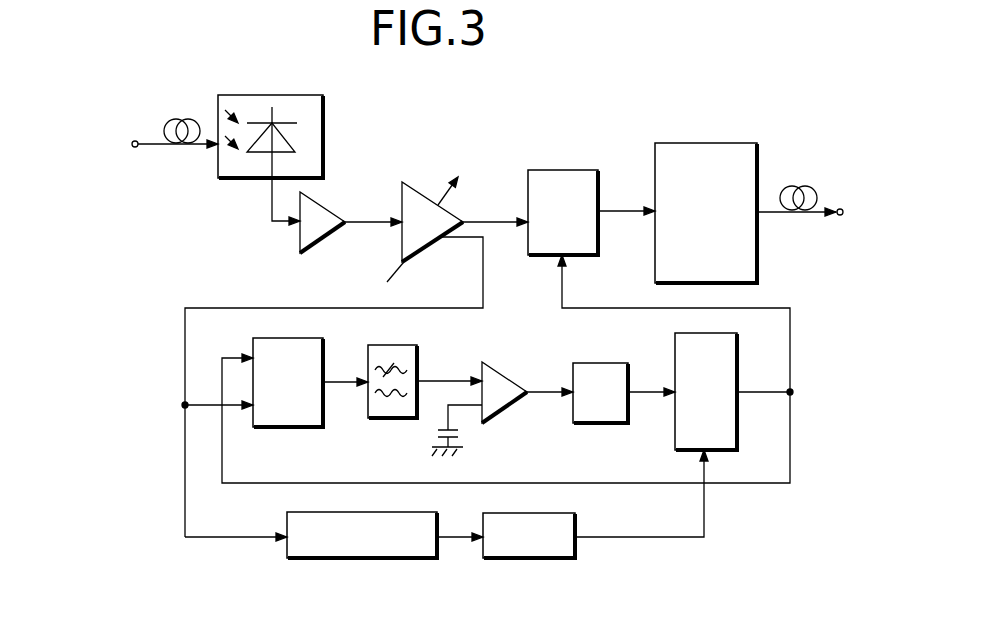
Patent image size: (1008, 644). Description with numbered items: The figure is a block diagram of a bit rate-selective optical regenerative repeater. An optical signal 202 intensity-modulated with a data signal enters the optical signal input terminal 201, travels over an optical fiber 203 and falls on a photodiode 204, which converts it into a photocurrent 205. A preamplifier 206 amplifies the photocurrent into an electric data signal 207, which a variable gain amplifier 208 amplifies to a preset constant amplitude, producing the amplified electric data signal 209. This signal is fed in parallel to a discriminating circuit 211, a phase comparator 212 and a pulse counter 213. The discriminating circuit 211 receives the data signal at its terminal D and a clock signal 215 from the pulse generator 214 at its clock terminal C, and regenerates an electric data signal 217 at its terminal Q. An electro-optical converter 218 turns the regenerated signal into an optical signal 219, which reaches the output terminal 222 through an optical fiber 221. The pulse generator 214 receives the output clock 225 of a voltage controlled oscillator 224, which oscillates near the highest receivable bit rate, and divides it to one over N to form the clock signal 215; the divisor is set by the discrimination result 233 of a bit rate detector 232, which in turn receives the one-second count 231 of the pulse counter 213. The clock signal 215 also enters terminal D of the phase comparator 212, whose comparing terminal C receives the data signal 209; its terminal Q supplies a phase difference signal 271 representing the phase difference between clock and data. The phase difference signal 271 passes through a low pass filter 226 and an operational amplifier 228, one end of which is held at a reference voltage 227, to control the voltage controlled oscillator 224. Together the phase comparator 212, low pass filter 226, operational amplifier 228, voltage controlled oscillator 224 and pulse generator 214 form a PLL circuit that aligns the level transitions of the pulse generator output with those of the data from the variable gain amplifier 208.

The optical signal input terminal 201 is at (135, 140).
The optical signal 202 is at (155, 146).
The optical fiber 203 is at (192, 117).
The photodiode 204 is at (327, 115).
The photocurrent 205 is at (270, 211).
The preamplifier 206 is at (320, 197).
The electric data signal 207 is at (362, 224).
The variable gain amplifier 208 is at (407, 180).
The amplified electric data signal 209 is at (487, 210).
The discriminating circuit 211 is at (553, 168).
The phase comparator 212 is at (325, 342).
The pulse counter 213 is at (285, 533).
The pulse generator 214 is at (740, 375).
The clock signal 215 is at (792, 357).
The electric data signal 217 is at (620, 208).
The electro-optical converter 218 is at (688, 142).
The optical signal 219 is at (777, 213).
The optical fiber 221 is at (802, 183).
The output terminal 222 is at (842, 217).
The voltage controlled oscillator 224 is at (587, 362).
The output clock 225 is at (640, 397).
The low pass filter 226 is at (420, 348).
The reference voltage 227 is at (457, 440).
The operational amplifier 228 is at (497, 362).
The count 231 is at (457, 533).
The bit rate detector 232 is at (580, 525).
The discrimination result 233 is at (707, 513).
The phase difference signal 271 is at (343, 383).